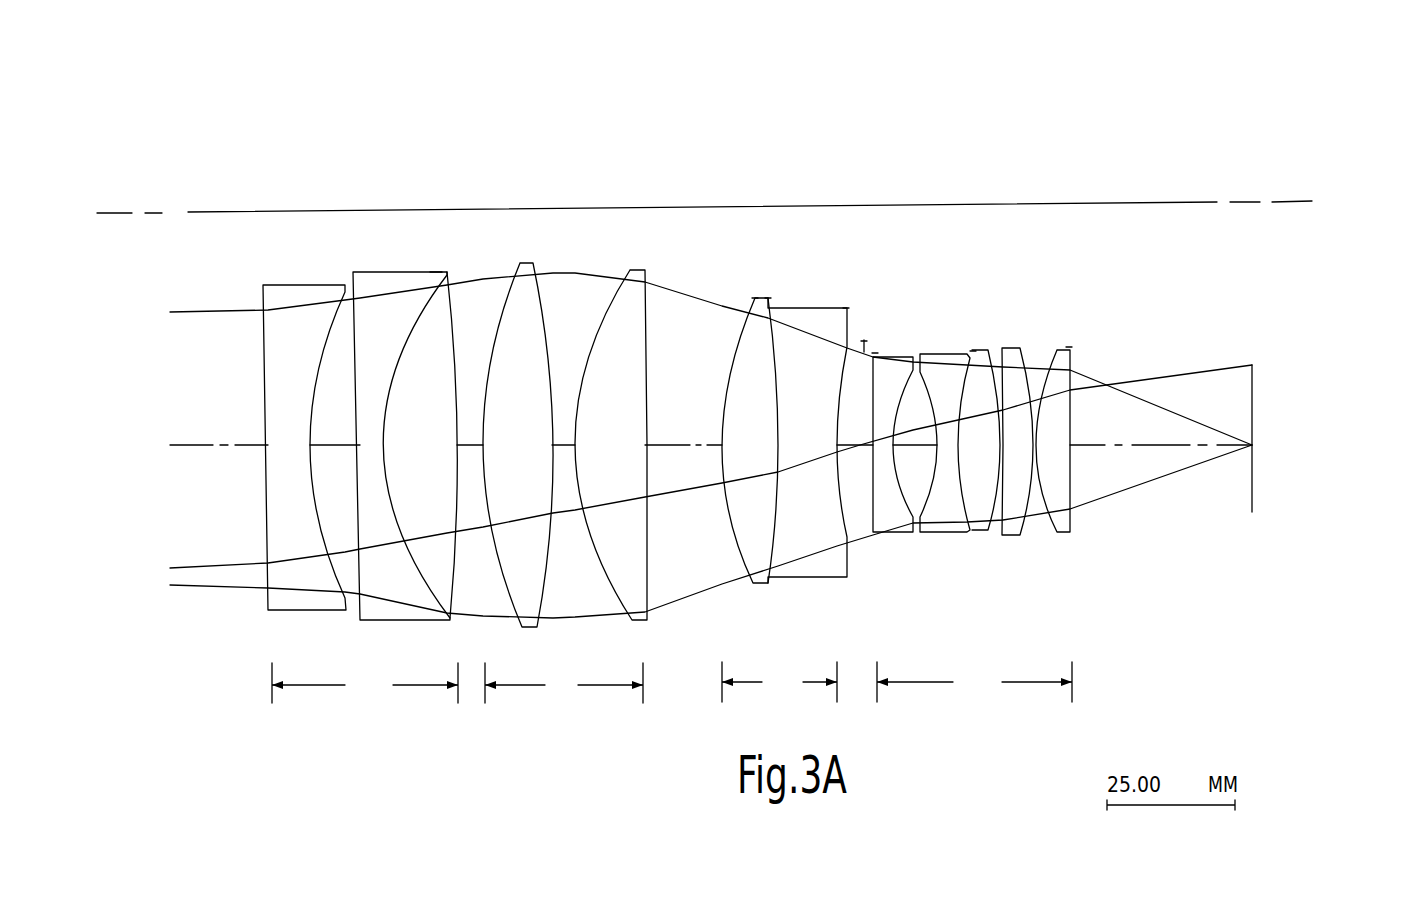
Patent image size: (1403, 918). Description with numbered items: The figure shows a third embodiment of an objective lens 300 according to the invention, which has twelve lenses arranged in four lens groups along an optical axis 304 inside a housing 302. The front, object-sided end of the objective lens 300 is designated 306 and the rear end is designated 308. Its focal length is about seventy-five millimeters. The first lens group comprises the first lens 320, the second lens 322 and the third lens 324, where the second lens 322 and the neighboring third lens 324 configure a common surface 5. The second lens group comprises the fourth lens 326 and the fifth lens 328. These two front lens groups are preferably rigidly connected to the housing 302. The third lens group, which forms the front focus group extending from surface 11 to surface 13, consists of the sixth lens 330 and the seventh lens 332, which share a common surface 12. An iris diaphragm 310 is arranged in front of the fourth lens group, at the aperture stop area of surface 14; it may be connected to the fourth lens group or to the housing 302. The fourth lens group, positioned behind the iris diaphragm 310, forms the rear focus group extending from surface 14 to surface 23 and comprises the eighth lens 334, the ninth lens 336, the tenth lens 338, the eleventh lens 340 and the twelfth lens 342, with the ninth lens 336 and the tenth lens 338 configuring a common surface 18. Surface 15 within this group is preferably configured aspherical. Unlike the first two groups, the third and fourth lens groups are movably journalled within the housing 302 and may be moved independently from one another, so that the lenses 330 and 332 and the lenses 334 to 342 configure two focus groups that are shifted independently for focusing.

The objective lens 300 is at (1255, 131).
The housing 302 is at (1022, 203).
The optical axis 304 is at (1176, 440).
The front end 306 is at (137, 288).
The rear end 308 is at (1293, 280).
The iris diaphragm 310 is at (863, 348).
The first lens 320 is at (288, 297).
The second lens 322 is at (380, 283).
The third lens 324 is at (440, 313).
The fourth lens 326 is at (523, 297).
The fifth lens 328 is at (640, 275).
The sixth lens 330 is at (758, 552).
The seventh lens 332 is at (817, 565).
The eighth lens 334 is at (900, 533).
The ninth lens 336 is at (937, 533).
The tenth lens 338 is at (983, 532).
The eleventh lens 340 is at (1017, 535).
The twelfth lens 342 is at (1073, 530).
The common surface No. 5 is at (436, 272).
The surface No. 11 is at (755, 298).
The common surface No. 12 is at (768, 298).
The surface No. 13 is at (846, 308).
The surface No. 14 is at (864, 341).
The surface No. 15 is at (875, 353).
The common surface No. 18 is at (973, 351).
The surface No. 23 is at (1069, 347).